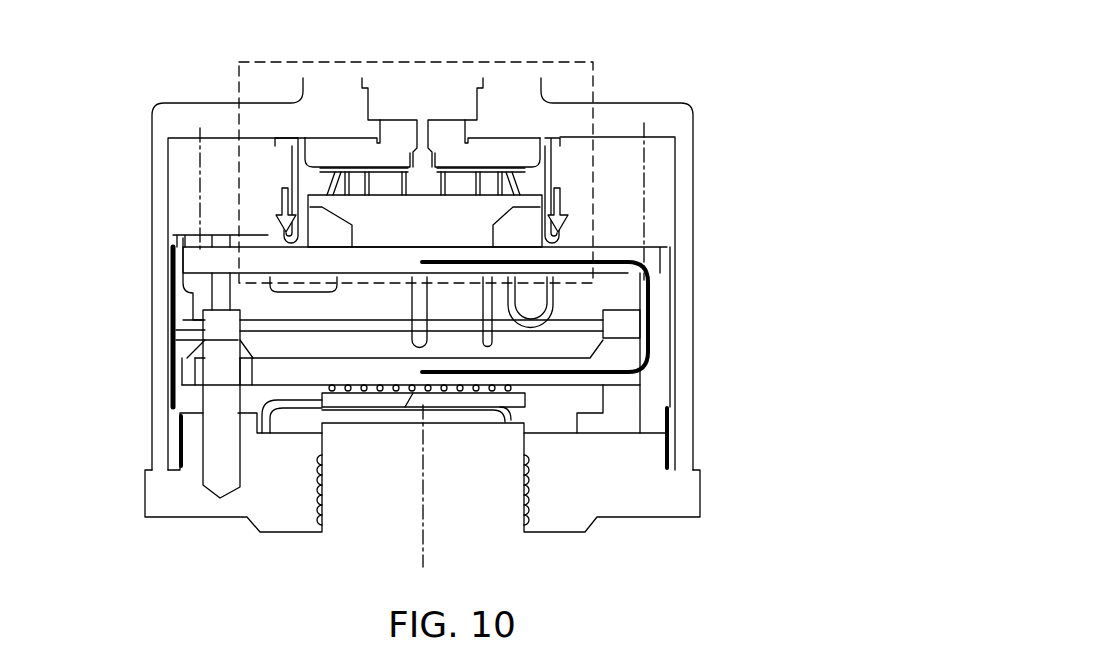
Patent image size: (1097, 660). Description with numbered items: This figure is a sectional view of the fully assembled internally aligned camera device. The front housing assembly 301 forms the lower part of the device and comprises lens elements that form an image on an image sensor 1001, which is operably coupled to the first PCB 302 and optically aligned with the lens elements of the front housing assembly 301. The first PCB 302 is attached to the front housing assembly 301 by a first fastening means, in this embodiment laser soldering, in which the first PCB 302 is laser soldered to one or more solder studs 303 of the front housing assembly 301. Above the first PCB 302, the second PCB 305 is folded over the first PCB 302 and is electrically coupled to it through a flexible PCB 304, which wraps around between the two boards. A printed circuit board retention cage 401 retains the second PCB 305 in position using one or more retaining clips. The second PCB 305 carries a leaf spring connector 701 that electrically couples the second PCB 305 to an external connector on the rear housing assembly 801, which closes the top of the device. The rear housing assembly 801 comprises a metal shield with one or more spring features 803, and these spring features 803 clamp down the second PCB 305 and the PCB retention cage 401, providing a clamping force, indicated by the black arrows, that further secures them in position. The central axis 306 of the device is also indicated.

The front housing assembly 301 is at (668, 493).
The first PCB 302 is at (623, 377).
The solder stud 303 is at (221, 472).
The flexible PCB 304 is at (655, 312).
The second PCB 305 is at (615, 250).
The central axis 306 is at (430, 524).
The printed circuit board retention cage 401 is at (178, 306).
The leaf spring connector 701 is at (510, 205).
The rear housing assembly 801 is at (530, 123).
The spring feature 803 is at (553, 166).
The image sensor 1001 is at (370, 398).